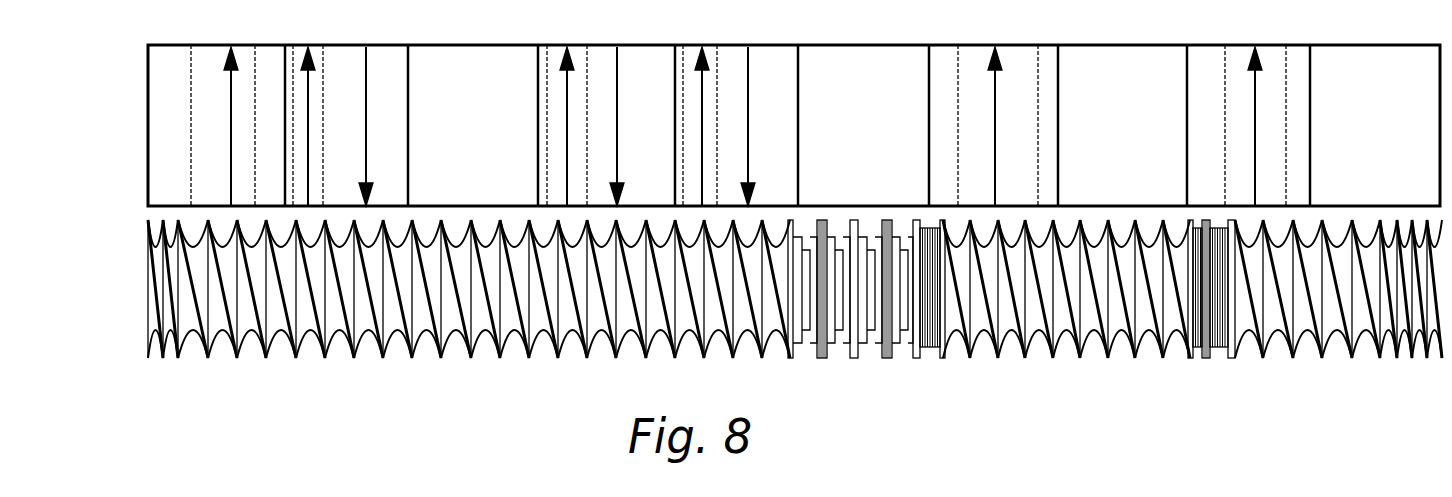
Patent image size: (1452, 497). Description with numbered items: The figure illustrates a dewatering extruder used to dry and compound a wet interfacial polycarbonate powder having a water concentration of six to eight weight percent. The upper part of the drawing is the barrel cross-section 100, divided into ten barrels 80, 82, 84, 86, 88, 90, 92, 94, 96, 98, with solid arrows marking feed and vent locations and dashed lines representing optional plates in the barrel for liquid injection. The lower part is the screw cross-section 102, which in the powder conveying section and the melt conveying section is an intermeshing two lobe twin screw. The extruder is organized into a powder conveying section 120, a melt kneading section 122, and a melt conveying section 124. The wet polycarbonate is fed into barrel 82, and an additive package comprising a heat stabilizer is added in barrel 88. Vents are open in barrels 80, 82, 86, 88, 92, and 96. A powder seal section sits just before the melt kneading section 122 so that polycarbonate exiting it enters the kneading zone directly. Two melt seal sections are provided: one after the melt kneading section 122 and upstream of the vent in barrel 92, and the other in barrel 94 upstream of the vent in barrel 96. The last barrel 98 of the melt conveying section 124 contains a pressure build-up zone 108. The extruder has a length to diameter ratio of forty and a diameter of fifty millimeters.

The barrel 80 is at (157, 130).
The barrel 82 is at (332, 130).
The barrel 84 is at (462, 130).
The barrel 86 is at (630, 130).
The barrel 88 is at (755, 130).
The barrel 90 is at (850, 130).
The barrel 92 is at (1004, 130).
The barrel 94 is at (1109, 130).
The barrel 96 is at (1194, 130).
The barrel 98 is at (1359, 130).
The barrel cross-section 100 is at (125, 150).
The screw cross-section 102 is at (125, 293).
The pressure build-up zone 108 is at (1397, 298).
The powder conveying section 120 is at (147, 375).
The melt kneading section 122 is at (793, 375).
The melt conveying section 124 is at (917, 375).